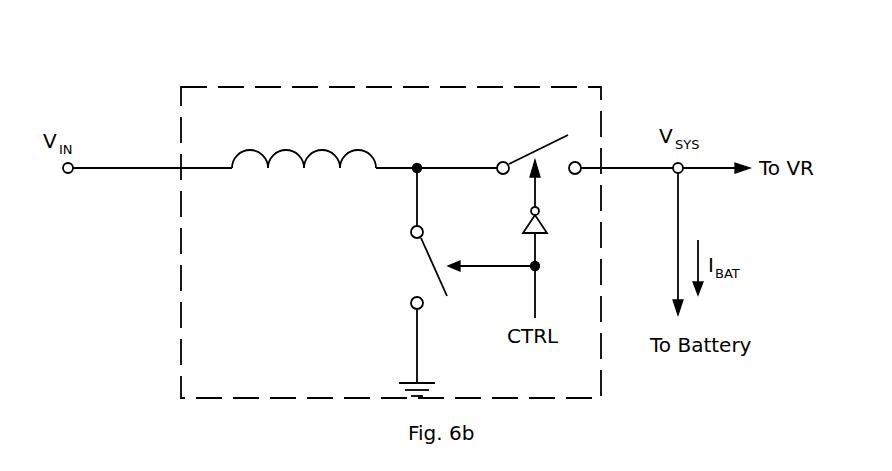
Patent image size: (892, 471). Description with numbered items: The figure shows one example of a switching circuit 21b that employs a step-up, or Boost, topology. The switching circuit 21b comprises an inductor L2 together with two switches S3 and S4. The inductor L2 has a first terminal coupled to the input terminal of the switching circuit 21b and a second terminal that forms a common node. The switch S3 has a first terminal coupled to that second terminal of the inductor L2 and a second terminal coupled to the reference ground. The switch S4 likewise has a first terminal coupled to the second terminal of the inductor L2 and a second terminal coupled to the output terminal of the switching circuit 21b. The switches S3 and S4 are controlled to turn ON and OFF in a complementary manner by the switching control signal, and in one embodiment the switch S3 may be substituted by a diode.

The switching circuit 21b is at (548, 83).
The inductor L2 is at (304, 141).
The switch S3 is at (408, 240).
The switch S4 is at (539, 160).